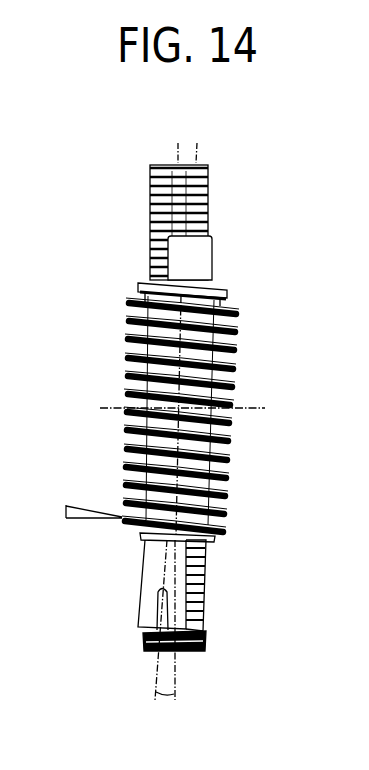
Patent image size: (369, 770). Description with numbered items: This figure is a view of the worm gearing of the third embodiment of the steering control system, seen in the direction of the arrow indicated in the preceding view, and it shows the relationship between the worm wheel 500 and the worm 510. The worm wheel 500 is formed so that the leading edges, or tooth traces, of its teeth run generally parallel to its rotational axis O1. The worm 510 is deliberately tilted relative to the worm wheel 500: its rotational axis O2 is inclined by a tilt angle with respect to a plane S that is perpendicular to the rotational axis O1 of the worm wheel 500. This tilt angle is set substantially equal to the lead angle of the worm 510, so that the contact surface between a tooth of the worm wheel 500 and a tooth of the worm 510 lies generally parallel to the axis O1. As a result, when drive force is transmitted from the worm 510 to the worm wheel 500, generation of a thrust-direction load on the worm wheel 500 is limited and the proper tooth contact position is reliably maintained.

The worm wheel 500 is at (205, 166).
The worm 510 is at (222, 283).
The rotational axis of the worm wheel O1 is at (105, 406).
The rotational axis of the worm O2 is at (152, 684).
The plane S is at (176, 686).